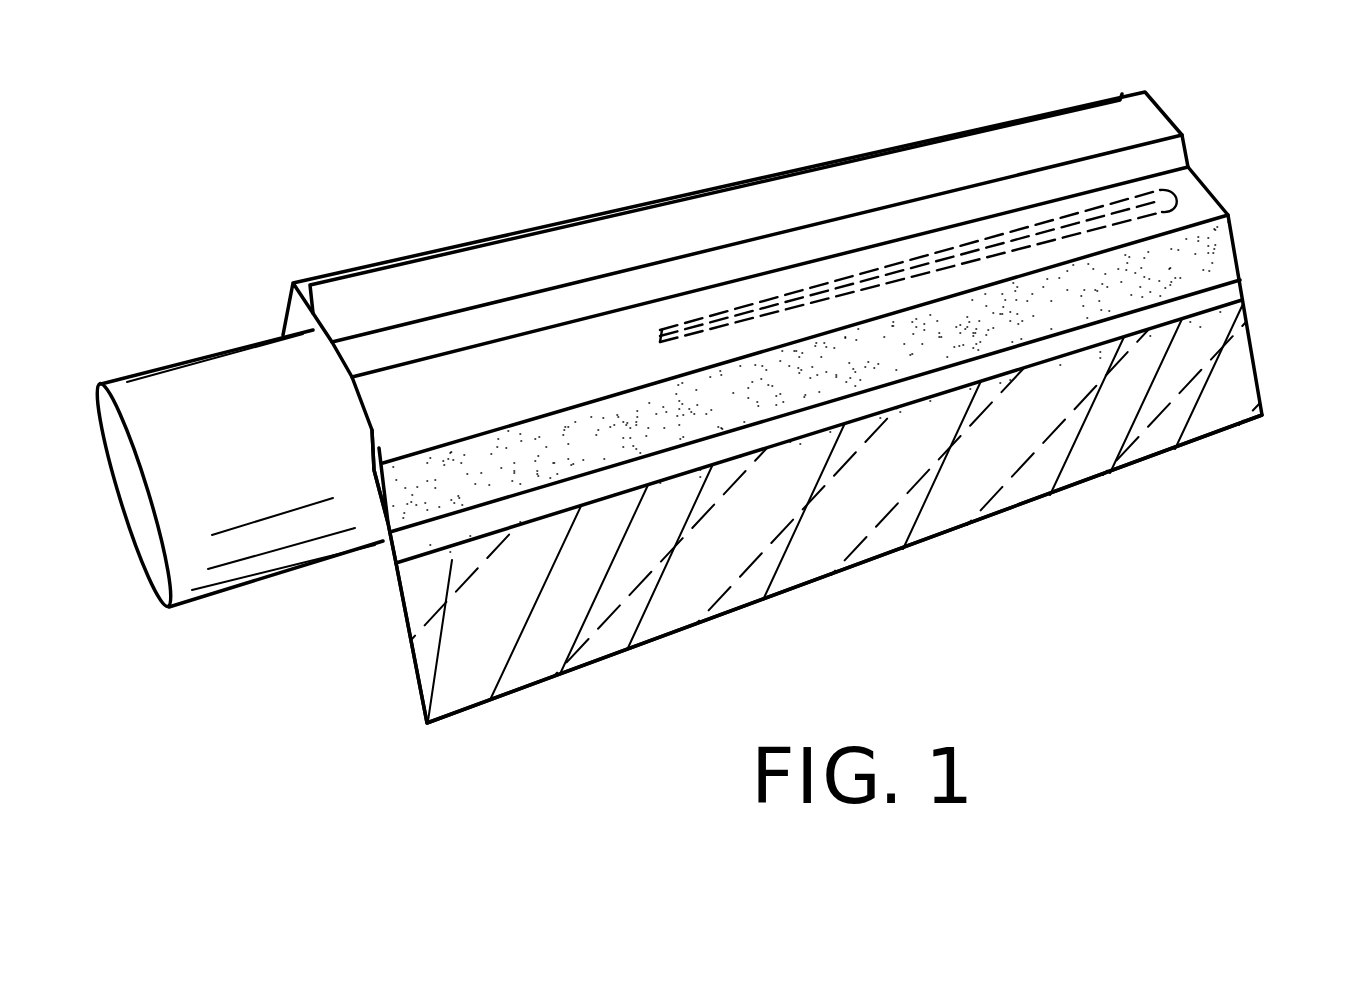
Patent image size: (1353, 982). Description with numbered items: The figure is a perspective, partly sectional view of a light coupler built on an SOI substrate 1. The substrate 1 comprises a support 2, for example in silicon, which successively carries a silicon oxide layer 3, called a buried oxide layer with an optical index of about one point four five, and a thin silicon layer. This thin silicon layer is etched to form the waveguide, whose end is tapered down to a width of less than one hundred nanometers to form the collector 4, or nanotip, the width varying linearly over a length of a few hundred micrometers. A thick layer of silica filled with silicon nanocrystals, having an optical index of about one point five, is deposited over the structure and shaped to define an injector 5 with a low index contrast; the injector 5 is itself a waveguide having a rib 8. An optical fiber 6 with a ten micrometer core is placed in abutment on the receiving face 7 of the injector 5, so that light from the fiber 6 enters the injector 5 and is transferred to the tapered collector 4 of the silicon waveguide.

The SOI substrate 1 is at (369, 675).
The support 2 is at (910, 513).
The silicon oxide layer 3 is at (1226, 285).
The collector 4 is at (1180, 189).
The injector 5 is at (1217, 250).
The optical fiber 6 is at (206, 379).
The receiving face 7 is at (380, 492).
The rib 8 is at (443, 278).